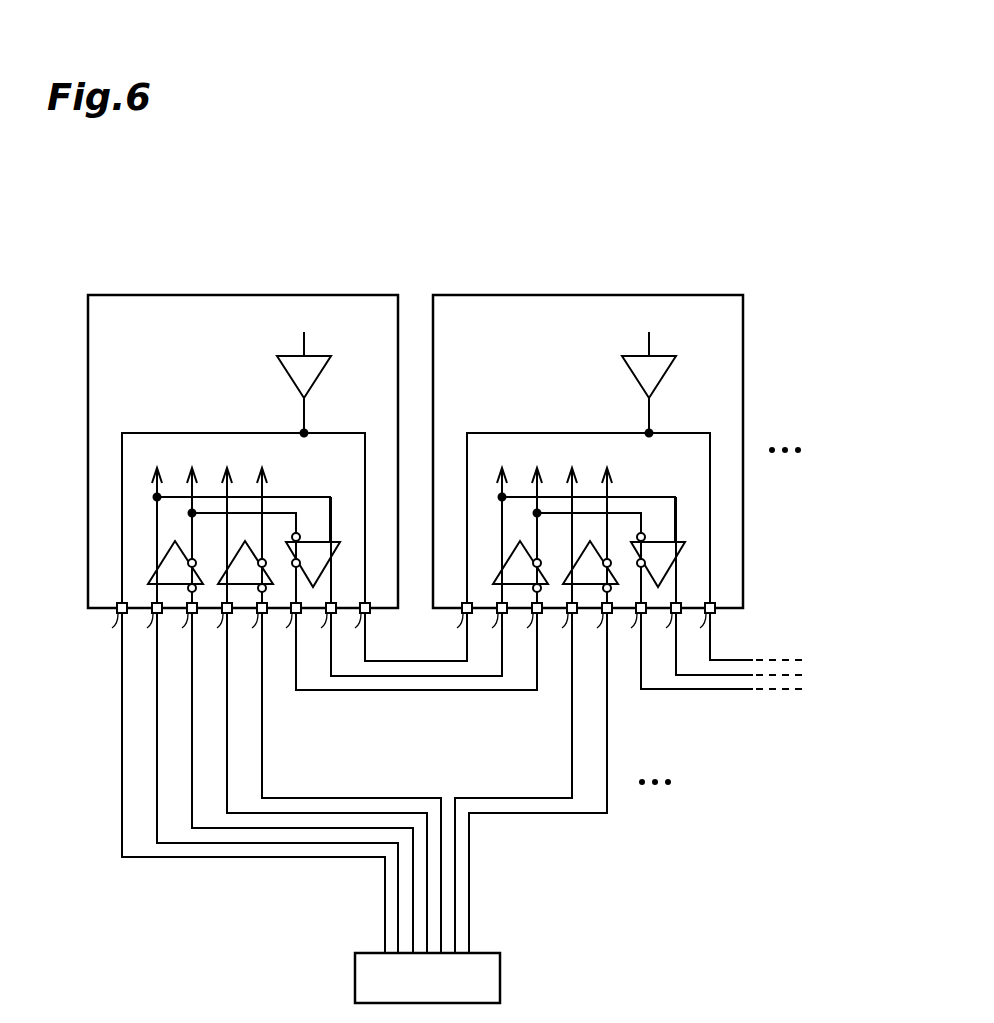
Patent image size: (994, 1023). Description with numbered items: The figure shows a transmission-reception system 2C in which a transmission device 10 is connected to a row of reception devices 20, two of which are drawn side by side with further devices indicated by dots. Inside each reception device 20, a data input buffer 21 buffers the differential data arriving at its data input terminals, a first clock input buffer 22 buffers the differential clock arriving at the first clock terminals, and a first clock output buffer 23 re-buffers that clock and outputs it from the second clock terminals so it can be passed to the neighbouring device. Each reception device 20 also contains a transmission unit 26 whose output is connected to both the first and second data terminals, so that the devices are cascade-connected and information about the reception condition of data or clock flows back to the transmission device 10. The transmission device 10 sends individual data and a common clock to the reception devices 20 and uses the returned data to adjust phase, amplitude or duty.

The transmission-reception system 2C is at (692, 180).
The reception device 20 is at (335, 295).
The transmission unit 26 is at (289, 383).
The first clock input buffer 22 is at (157, 576).
The data input buffer 21 is at (227, 576).
The first clock output buffer 23 is at (336, 546).
The transmission device 10 is at (500, 975).